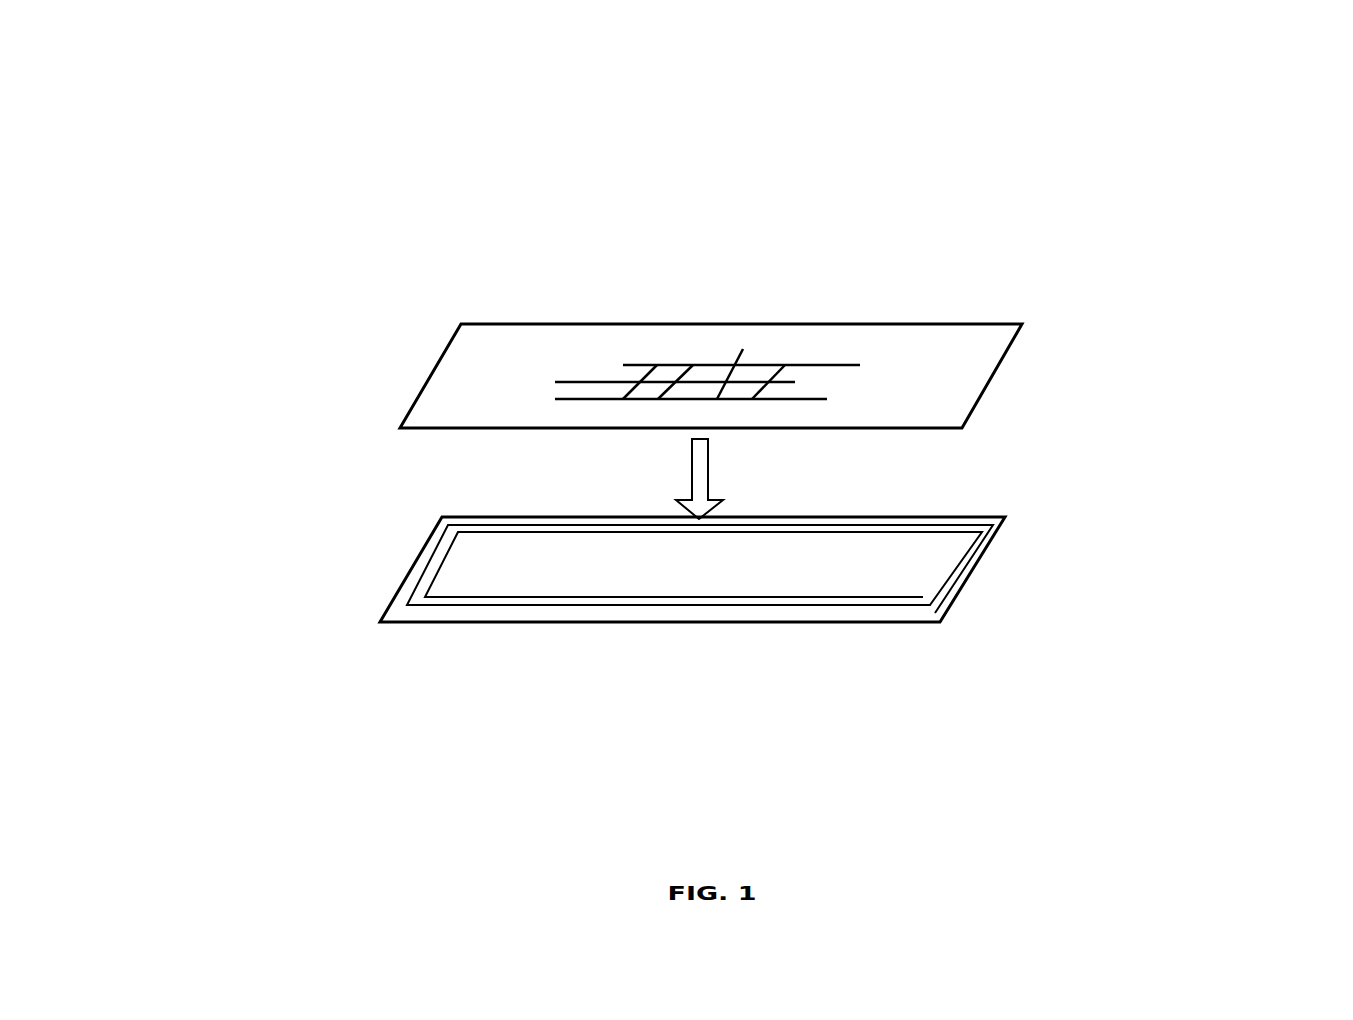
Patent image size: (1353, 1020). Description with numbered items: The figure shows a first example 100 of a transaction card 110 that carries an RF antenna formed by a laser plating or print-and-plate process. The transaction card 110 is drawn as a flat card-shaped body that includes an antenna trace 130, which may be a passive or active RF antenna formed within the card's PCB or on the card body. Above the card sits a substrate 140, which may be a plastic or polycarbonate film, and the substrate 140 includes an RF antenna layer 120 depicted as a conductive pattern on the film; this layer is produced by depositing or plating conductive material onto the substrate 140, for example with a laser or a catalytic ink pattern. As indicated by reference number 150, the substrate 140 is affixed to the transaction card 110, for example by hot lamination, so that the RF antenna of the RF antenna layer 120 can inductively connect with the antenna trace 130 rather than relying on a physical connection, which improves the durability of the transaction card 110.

The first example 100 is at (230, 63).
The transaction card 110 is at (1113, 584).
The RF antenna layer 120 is at (490, 109).
The antenna trace 130 is at (1125, 506).
The substrate 140 is at (1171, 364).
The affixing of substrate to transaction card 150 is at (858, 471).